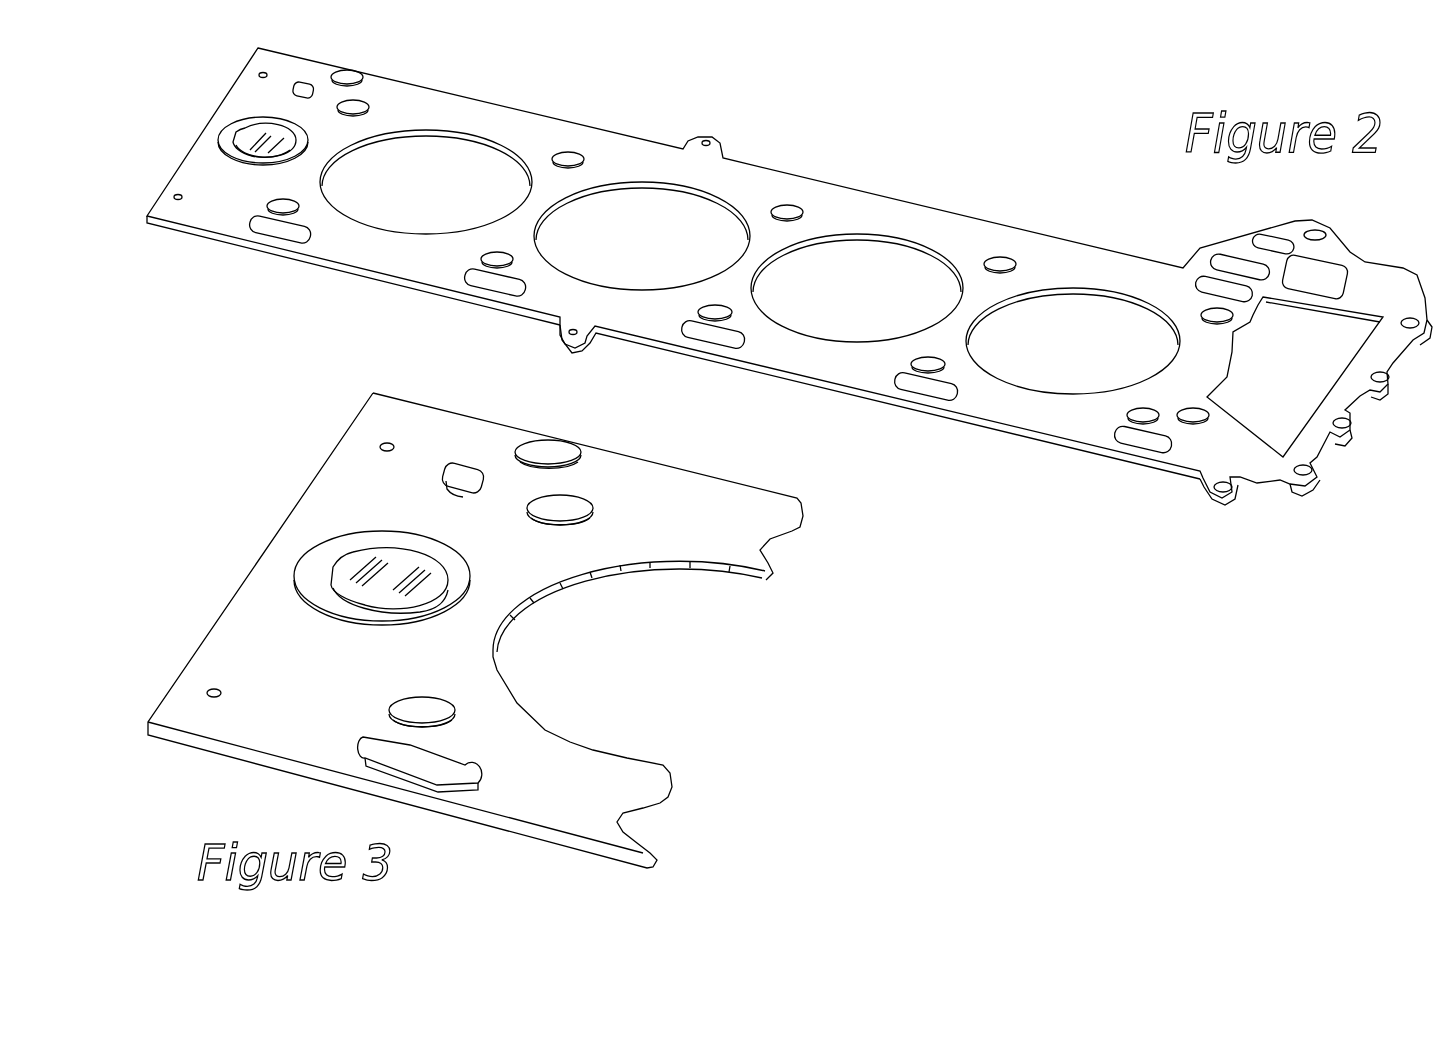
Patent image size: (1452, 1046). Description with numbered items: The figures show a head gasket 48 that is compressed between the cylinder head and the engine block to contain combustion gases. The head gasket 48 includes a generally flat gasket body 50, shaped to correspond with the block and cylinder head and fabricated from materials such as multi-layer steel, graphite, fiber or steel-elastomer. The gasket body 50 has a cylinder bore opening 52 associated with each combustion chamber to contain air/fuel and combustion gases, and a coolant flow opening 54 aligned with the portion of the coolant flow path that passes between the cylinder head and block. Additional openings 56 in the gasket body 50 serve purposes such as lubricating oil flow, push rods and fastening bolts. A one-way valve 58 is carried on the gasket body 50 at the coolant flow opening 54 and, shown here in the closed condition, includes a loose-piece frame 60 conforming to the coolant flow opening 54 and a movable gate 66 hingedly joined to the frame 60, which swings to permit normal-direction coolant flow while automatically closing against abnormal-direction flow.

In FIG. 2, the head gasket 48 is at (772, 276).
In FIG. 3, the head gasket 48 is at (475, 630).
In FIG. 2, the gasket body 50 is at (862, 213).
In FIG. 3, the gasket body 50 is at (347, 475).
In FIG. 2, the cylinder bore opening 52 is at (400, 133).
In FIG. 3, the cylinder bore opening 52 is at (605, 577).
In FIG. 2, the coolant flow opening 54 is at (210, 111).
In FIG. 2, the additional openings 56 is at (571, 170).
In FIG. 3, the additional openings 56 is at (553, 467).
In FIG. 2, the one-way valve 58 is at (232, 171).
In FIG. 3, the one-way valve 58 is at (376, 542).
In FIG. 3, the frame 60 is at (427, 548).
In FIG. 3, the gate 66 is at (376, 553).